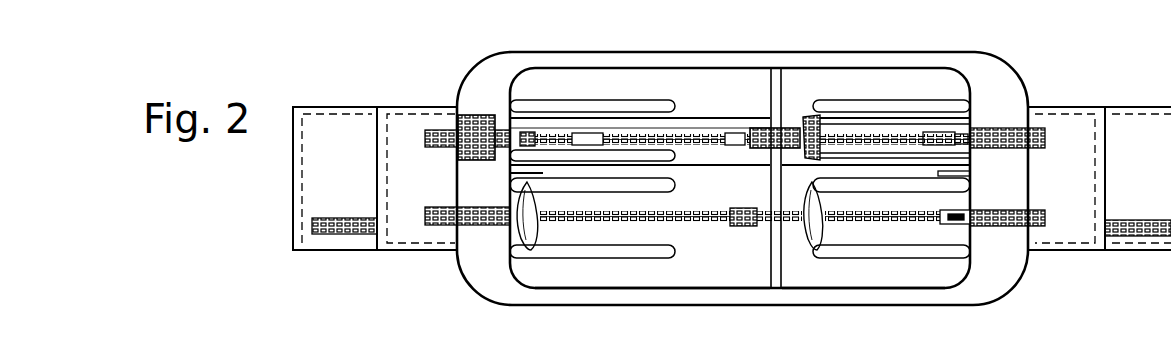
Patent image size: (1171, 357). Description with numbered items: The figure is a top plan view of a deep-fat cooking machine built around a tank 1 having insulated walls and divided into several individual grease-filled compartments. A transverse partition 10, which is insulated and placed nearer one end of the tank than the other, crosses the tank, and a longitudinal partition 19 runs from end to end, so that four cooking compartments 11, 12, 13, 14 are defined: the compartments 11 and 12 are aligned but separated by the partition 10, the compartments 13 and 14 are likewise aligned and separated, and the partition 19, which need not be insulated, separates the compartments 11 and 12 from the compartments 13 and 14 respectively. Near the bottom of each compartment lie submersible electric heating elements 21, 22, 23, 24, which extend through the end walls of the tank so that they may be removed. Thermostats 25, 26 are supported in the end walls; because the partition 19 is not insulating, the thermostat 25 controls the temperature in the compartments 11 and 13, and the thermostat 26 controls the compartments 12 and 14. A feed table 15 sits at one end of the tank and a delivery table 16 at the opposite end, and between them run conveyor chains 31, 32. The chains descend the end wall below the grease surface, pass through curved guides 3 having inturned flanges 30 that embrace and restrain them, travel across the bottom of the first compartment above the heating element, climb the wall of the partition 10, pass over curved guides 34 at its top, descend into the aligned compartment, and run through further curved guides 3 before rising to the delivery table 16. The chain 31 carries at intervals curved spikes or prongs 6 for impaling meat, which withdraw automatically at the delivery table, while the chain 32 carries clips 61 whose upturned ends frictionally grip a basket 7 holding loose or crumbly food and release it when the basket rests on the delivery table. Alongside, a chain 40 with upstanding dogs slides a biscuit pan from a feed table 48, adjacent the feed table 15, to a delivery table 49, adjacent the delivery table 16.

The tank 1 is at (922, 62).
The curved guides 3 is at (955, 224).
The curved spikes or prongs 6 is at (958, 216).
The basket 7 is at (470, 116).
The transverse partition 10 is at (773, 88).
The cooking compartment 11 is at (652, 270).
The cooking compartment 12 is at (863, 271).
The cooking compartment 13 is at (640, 119).
The cooking compartment 14 is at (876, 117).
The feed table 15 is at (417, 178).
The delivery table 16 is at (1066, 178).
The longitudinal partition 19 is at (685, 165).
The electric heating element 21 is at (660, 194).
The electric heating element 22 is at (891, 218).
The electric heating element 23 is at (622, 150).
The electric heating element 24 is at (895, 155).
The thermostat 25 is at (543, 173).
The thermostat 26 is at (948, 172).
The inturned flanges 30 is at (533, 232).
The chain 31 is at (578, 222).
The chain 32 is at (557, 134).
The curved guides 34 is at (790, 128).
The chain 40 is at (358, 218).
The feed table 48 is at (335, 178).
The delivery table 49 is at (1138, 178).
The clip 61 is at (724, 133).